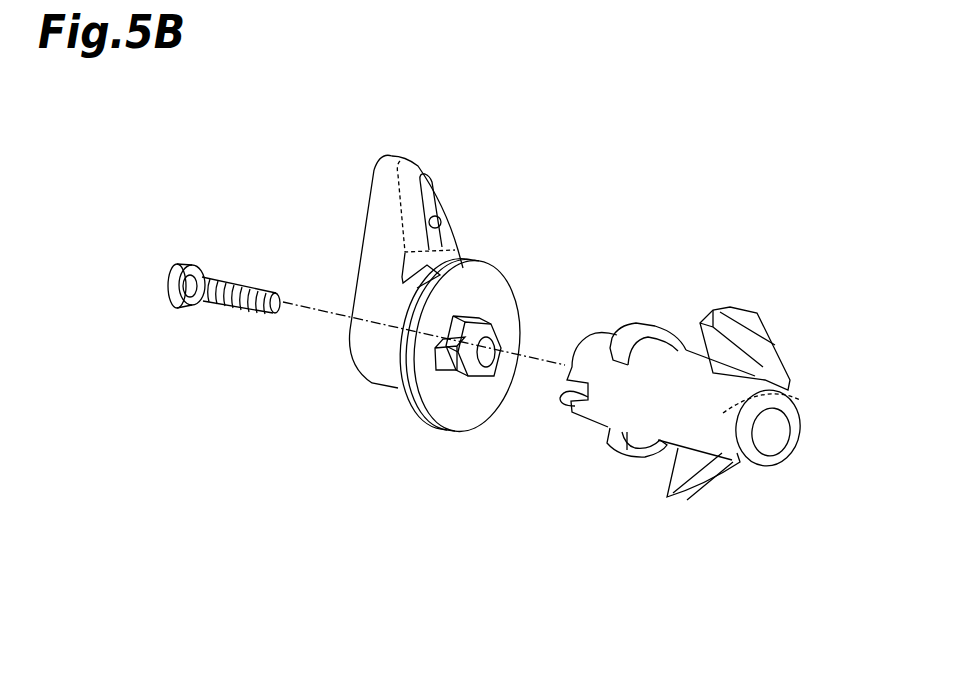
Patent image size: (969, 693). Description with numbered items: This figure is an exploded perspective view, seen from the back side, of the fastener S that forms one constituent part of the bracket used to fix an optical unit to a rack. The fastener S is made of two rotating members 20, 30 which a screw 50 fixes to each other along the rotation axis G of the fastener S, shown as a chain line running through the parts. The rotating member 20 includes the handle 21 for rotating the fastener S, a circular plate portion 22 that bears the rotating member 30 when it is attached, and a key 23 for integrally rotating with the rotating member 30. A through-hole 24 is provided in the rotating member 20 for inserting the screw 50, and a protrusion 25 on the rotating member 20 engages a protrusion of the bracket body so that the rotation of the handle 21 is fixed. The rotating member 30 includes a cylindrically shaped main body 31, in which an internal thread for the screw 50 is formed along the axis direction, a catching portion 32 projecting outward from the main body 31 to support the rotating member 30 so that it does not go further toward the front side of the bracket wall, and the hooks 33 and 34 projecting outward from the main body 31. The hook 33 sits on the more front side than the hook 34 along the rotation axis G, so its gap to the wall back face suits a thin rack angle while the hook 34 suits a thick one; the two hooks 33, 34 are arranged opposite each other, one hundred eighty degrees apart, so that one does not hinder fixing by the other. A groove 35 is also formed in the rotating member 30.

The fastener S is at (557, 173).
The rotation axis G is at (308, 303).
The screw 50 is at (238, 275).
The rotating member 20 is at (428, 160).
The handle 21 is at (370, 357).
The circular plate portion 22 is at (460, 410).
The key 23 is at (403, 407).
The through-hole 24 is at (505, 377).
The protrusion 25 is at (447, 208).
The rotating member 30 is at (726, 273).
The main body 31 is at (800, 413).
The catching portion 32 is at (650, 318).
The hook 33 is at (715, 487).
The hook 34 is at (763, 333).
The groove 35 is at (553, 405).